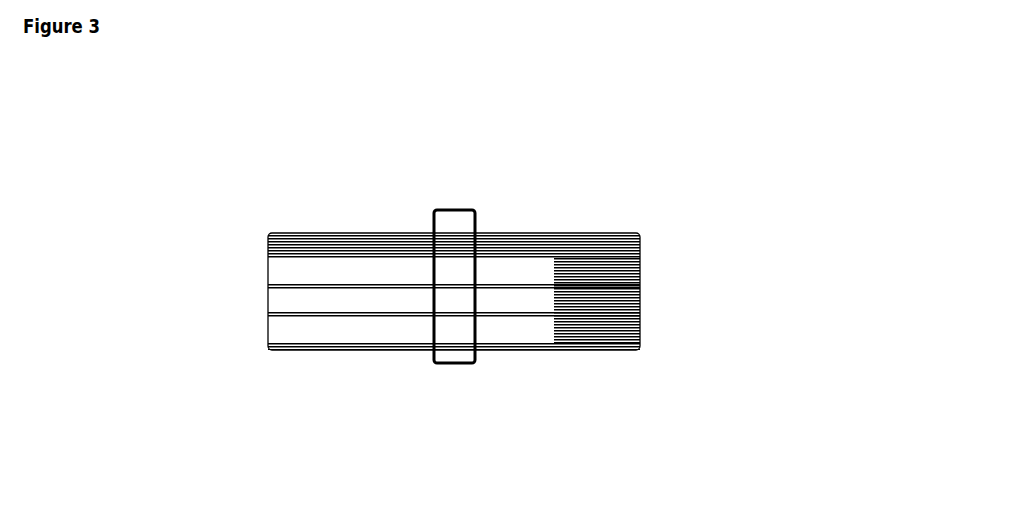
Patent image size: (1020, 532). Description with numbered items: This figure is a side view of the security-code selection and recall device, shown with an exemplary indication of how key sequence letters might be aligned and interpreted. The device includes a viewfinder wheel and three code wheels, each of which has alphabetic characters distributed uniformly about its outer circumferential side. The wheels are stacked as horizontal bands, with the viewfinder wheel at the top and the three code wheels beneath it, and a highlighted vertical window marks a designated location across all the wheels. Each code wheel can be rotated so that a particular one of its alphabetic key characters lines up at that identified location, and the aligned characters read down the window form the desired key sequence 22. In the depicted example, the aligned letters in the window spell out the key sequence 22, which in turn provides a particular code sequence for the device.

The key sequence 22 is at (655, 258).